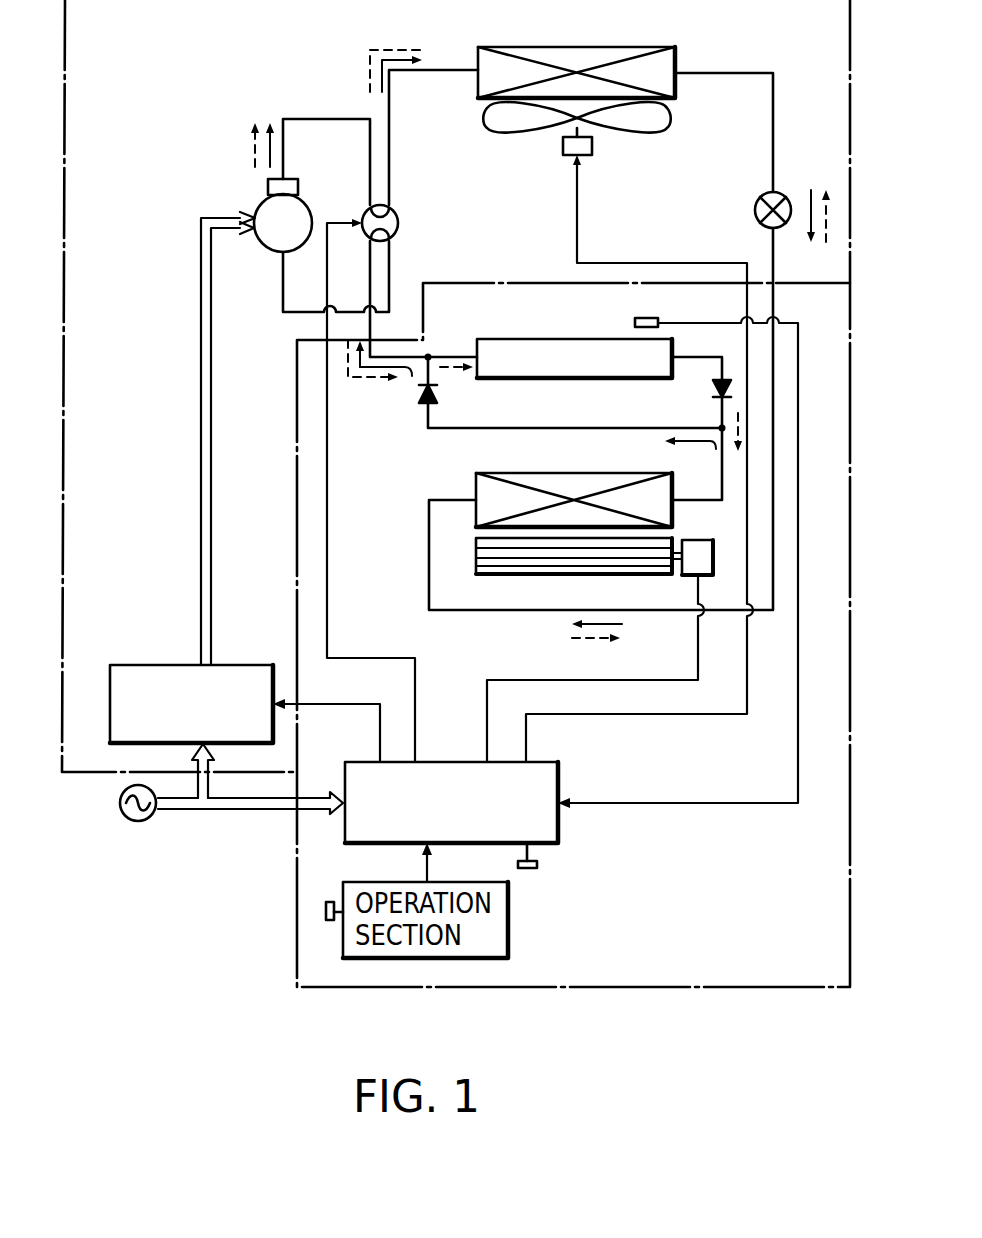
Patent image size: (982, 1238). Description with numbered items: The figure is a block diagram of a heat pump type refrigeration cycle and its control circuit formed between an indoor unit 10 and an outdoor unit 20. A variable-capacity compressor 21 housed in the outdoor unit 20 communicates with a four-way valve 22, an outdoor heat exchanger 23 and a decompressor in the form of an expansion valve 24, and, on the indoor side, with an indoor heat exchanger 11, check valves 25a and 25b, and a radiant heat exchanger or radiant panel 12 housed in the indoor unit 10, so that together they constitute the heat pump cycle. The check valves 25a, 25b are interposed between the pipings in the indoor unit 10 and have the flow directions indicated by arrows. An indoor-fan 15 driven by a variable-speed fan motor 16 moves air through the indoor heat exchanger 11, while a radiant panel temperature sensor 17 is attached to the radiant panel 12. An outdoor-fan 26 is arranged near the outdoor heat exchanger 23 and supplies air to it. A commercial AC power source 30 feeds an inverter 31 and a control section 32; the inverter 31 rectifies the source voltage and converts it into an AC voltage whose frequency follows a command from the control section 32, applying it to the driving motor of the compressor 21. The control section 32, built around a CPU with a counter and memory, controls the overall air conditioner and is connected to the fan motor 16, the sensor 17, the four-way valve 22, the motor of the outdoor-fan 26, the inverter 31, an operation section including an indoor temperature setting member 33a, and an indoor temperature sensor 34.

The indoor unit 10 is at (762, 990).
The indoor heat exchanger 11 is at (574, 473).
The radiant heat exchanger (radiant panel) 12 is at (547, 338).
The indoor-fan 15 is at (570, 574).
The variable-speed fan motor 16 is at (696, 540).
The radiant panel temperature sensor (thermistor) 17 is at (638, 316).
The outdoor unit 20 is at (62, 420).
The variable-capacity compressor 21 is at (258, 202).
The 4-way valve 22 is at (398, 223).
The outdoor heat exchanger 23 is at (581, 46).
The expansion valve 24 is at (759, 197).
The check valve 25a is at (420, 401).
The check valve 25b is at (713, 389).
The outdoor-fan 26 is at (598, 130).
The commercial AC power source 30 is at (140, 821).
The inverter 31 is at (152, 665).
The control section 32 is at (452, 762).
The indoor temperature setting member 33a is at (326, 912).
The indoor temperature sensor 34 is at (542, 866).